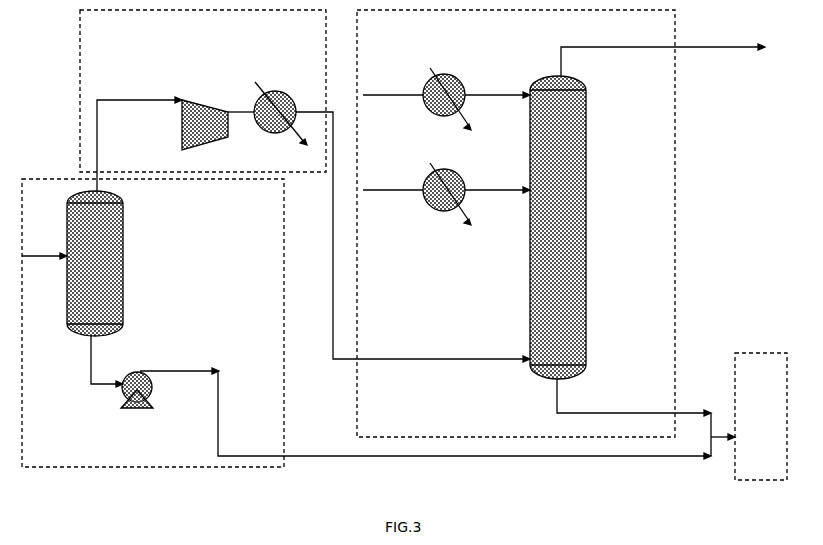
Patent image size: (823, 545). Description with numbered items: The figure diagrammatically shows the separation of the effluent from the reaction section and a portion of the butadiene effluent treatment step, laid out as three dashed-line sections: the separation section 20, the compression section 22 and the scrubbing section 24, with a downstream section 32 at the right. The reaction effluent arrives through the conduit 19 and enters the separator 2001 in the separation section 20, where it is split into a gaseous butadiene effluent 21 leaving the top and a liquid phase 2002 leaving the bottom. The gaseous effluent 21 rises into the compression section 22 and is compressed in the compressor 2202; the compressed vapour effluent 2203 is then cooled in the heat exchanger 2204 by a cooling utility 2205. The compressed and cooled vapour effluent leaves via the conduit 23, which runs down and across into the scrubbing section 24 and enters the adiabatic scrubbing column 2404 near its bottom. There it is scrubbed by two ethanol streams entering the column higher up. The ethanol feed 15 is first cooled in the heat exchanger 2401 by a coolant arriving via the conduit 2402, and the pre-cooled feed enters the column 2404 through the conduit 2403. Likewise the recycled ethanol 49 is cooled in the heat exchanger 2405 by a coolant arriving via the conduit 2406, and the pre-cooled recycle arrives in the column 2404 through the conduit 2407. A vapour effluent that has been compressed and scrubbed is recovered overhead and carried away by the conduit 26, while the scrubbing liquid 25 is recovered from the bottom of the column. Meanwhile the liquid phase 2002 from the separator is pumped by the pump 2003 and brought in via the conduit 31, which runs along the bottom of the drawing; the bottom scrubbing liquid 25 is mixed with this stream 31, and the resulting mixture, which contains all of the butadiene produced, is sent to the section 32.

The ethanol feed 15 is at (393, 104).
The conduit 19 is at (44, 249).
The separation section 20 is at (153, 323).
The gaseous effluent 21 is at (139, 135).
The compression section 22 is at (203, 91).
The conduit 23 is at (413, 237).
The scrubbing section 24 is at (516, 223).
The scrubbing liquid 25 is at (634, 417).
The conduit 26 is at (663, 49).
The conduit 31 is at (425, 425).
The section 32 is at (749, 416).
The recycled ethanol 49 is at (393, 199).
The separator 2001 is at (110, 263).
The liquid phase 2002 is at (108, 361).
The pump 2003 is at (154, 390).
The compressor 2202 is at (205, 117).
The compressed vapour effluent 2203 is at (240, 123).
The heat exchanger 2204 is at (275, 102).
The cooling utility 2205 is at (281, 119).
The heat exchanger 2401 is at (444, 85).
The conduit 2402 is at (459, 109).
The conduit 2403 is at (497, 88).
The adiabatic scrubbing column 2404 is at (573, 227).
The heat exchanger 2405 is at (444, 180).
The conduit 2406 is at (459, 204).
The conduit 2407 is at (497, 183).